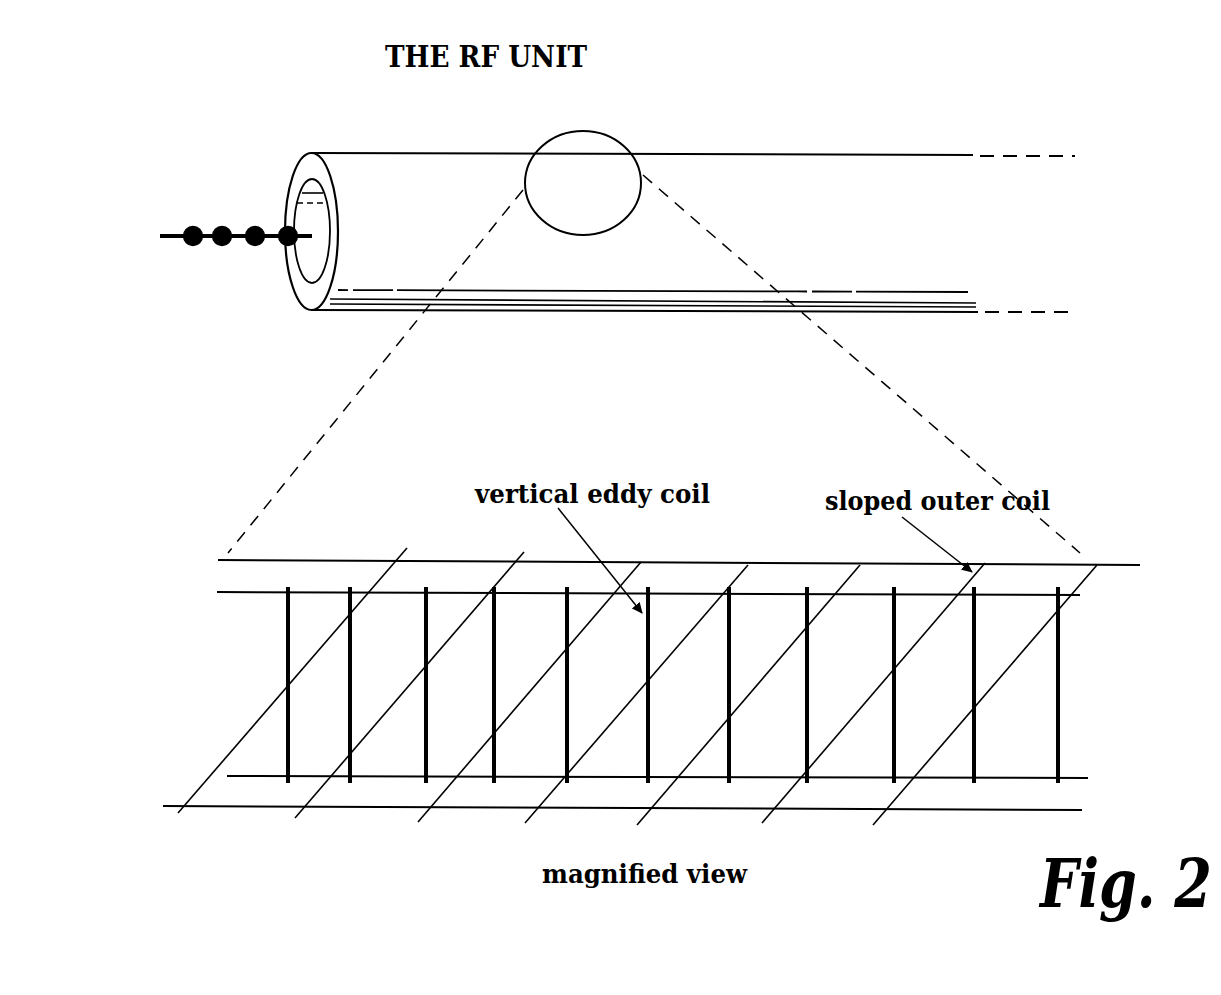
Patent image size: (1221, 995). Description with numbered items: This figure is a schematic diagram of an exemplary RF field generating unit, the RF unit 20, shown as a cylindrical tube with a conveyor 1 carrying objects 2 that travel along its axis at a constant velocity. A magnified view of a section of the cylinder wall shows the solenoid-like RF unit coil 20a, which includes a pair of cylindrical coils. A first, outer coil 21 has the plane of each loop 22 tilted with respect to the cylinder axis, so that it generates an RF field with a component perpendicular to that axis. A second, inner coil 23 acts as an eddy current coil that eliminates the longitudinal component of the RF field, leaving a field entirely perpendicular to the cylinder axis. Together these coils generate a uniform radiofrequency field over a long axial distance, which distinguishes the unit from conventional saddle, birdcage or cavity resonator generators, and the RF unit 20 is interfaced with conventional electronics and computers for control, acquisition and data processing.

The conveyor 1 is at (168, 214).
The objects 2 is at (252, 229).
The RF unit 20 is at (375, 157).
The solenoid-like RF unit coil 20a is at (294, 572).
The outer coil 21 is at (1078, 590).
The loop 22 is at (380, 578).
The inner coil 23 is at (1062, 748).